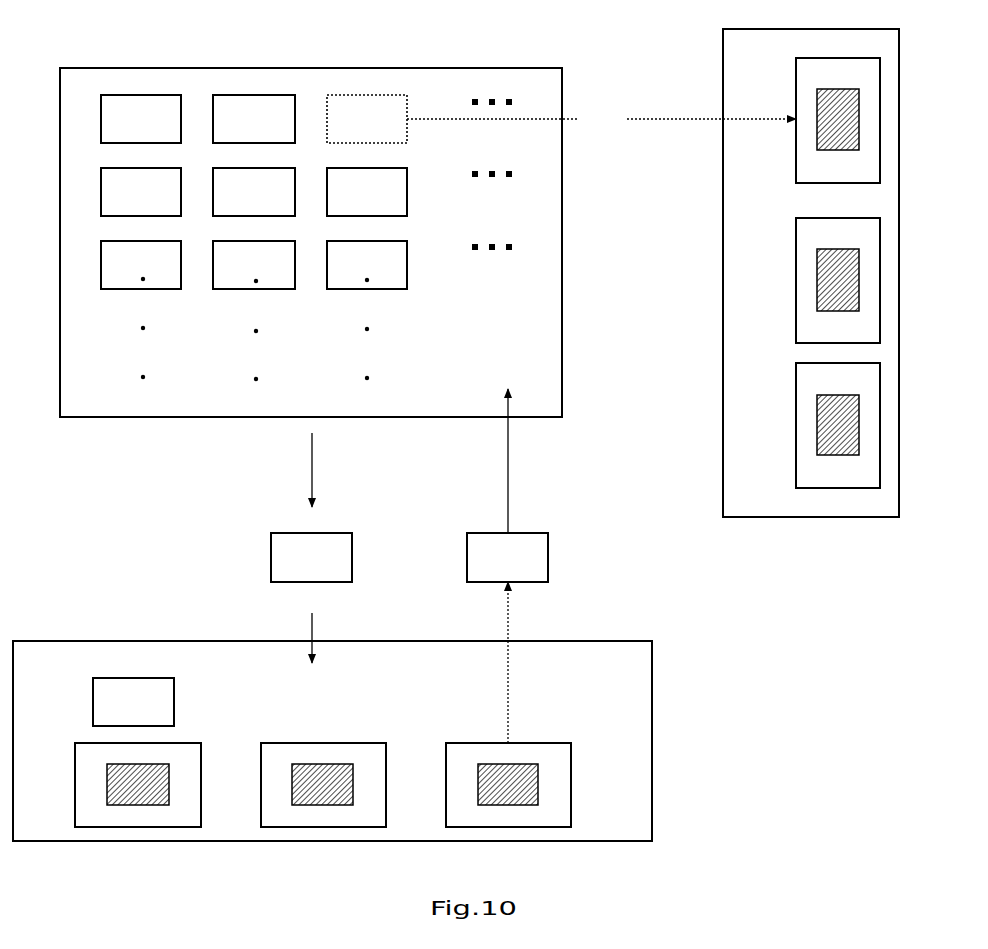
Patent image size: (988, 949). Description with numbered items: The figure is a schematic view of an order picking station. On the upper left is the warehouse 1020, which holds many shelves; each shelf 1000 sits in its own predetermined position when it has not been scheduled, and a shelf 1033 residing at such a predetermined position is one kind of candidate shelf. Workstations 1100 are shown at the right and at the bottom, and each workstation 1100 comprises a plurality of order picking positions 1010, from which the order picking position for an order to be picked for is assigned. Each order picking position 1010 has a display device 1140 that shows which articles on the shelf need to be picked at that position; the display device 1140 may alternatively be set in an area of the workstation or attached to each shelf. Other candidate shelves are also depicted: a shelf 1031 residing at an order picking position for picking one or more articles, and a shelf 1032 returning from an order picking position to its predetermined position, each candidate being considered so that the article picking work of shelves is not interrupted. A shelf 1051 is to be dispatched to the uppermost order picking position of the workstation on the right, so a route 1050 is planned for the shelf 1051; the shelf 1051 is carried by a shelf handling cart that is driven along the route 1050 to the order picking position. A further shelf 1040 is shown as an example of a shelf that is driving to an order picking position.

The shelf 1000 is at (140, 95).
The warehouse 1020 is at (110, 68).
The shelf residing at predetermined position 1033 is at (253, 168).
The shelf to be dispatched 1051 is at (389, 103).
The route 1050 is at (601, 121).
The workstation 1100 is at (860, 29).
The shelf driving to order picking position 1040 is at (338, 533).
The shelf returning from order picking position 1032 is at (523, 533).
The shelf residing at order picking position 1031 is at (153, 685).
The order picking position 1010 is at (184, 743).
The display device 1140 is at (338, 760).